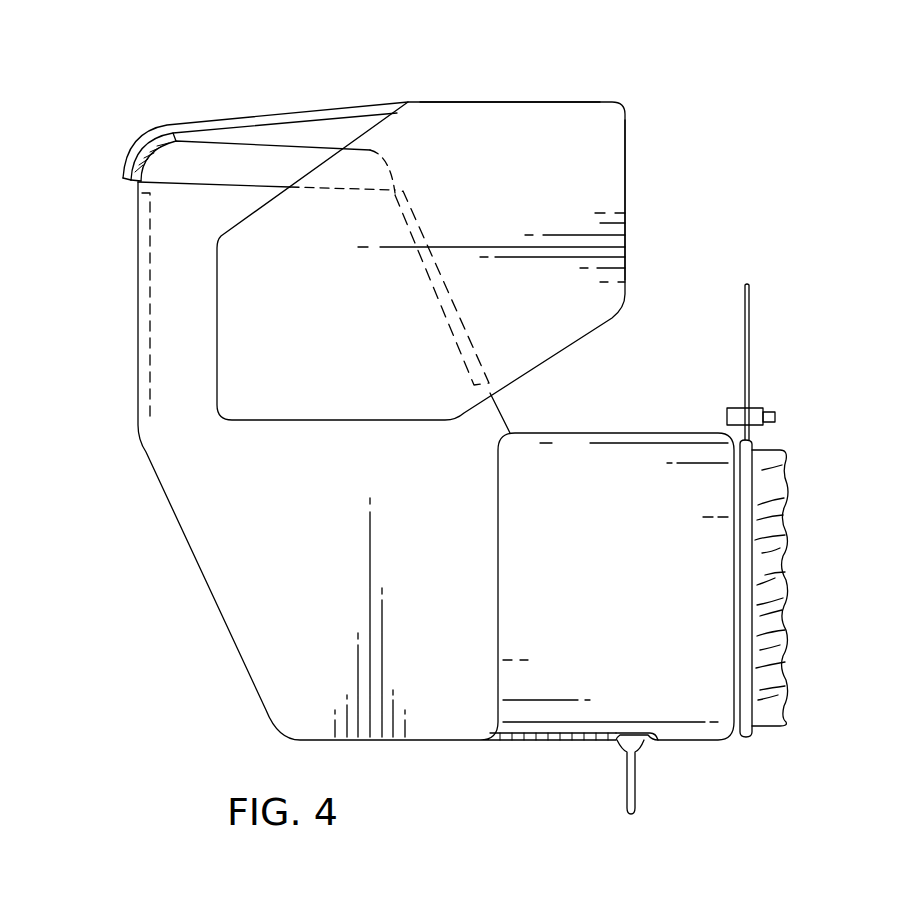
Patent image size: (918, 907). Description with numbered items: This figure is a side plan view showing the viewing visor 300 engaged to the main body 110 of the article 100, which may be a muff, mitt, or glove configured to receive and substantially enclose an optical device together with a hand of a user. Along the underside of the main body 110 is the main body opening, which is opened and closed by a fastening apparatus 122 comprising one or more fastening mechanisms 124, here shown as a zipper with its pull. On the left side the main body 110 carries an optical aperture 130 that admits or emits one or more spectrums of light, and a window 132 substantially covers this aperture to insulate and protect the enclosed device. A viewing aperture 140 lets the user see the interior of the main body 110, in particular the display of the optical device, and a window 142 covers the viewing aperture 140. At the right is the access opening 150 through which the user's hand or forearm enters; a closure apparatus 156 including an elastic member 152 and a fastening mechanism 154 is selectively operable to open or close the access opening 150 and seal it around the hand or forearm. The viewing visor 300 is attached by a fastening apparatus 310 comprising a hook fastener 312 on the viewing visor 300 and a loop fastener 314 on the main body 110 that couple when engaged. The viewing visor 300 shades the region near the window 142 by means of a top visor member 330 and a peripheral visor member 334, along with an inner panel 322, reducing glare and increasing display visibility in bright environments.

The article 100 is at (178, 66).
The main body 110 is at (258, 595).
The fastening apparatus 122 is at (544, 752).
The fastening mechanism 124 is at (626, 788).
The optical aperture 130 is at (88, 308).
The window 132 is at (147, 393).
The viewing aperture 140 is at (474, 301).
The window 142 is at (470, 356).
The access opening 150 is at (796, 544).
The elastic member 152 is at (750, 310).
The fastening mechanism 154 is at (754, 413).
The closure apparatus 156 is at (748, 756).
The viewing visor 300 is at (634, 55).
The fastening apparatus 310 is at (228, 163).
The hook fastener 312 is at (153, 140).
The loop fastener 314 is at (137, 167).
The inner panel 322 is at (550, 197).
The top visor member 330 is at (500, 100).
The peripheral visor member 334 is at (623, 140).